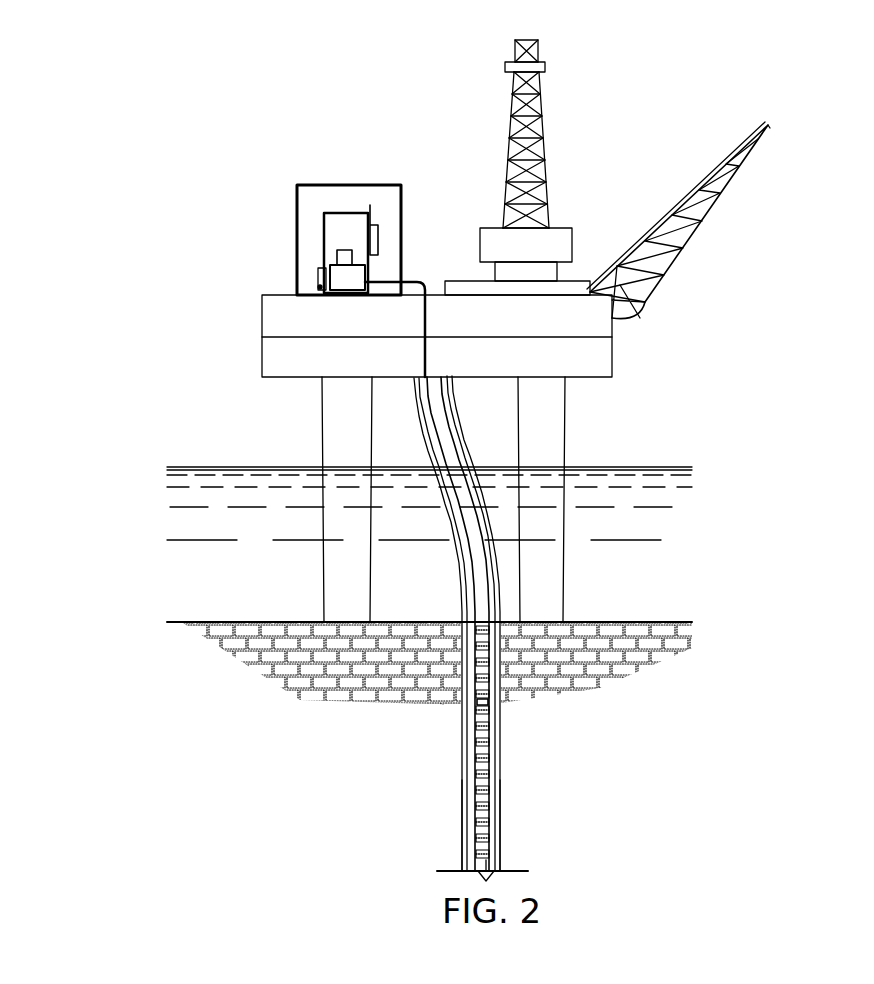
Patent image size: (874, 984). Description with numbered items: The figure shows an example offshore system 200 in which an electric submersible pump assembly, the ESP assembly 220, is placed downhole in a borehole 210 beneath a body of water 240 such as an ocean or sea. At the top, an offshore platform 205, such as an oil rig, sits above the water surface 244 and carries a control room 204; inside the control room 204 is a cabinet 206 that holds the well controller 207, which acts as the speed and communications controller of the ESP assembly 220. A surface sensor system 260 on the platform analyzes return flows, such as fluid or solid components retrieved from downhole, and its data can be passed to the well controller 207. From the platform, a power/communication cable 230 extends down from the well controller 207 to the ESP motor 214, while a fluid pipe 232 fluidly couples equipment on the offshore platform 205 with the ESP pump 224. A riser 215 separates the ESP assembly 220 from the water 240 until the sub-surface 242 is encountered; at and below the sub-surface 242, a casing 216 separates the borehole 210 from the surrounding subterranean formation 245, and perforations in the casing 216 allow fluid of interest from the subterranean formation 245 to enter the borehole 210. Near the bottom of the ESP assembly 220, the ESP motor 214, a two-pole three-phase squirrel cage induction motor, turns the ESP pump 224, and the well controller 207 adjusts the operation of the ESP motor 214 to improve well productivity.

The offshore system 200 is at (141, 94).
The control room 204 is at (368, 184).
The offshore platform 205 is at (262, 322).
The cabinet 206 is at (325, 220).
The well controller 207 is at (335, 253).
The surface sensor system 260 is at (352, 278).
The borehole 210 is at (460, 780).
The ESP motor 214 is at (487, 845).
The riser 215 is at (460, 578).
The casing 216 is at (463, 834).
The ESP assembly 220 is at (499, 748).
The ESP pump 224 is at (490, 703).
The power/communication cable 230 is at (448, 450).
The fluid pipe 232 is at (460, 513).
The body of water 240 is at (670, 518).
The sub-surface 242 is at (665, 622).
The water surface 244 is at (665, 466).
The subterranean formation 245 is at (350, 696).